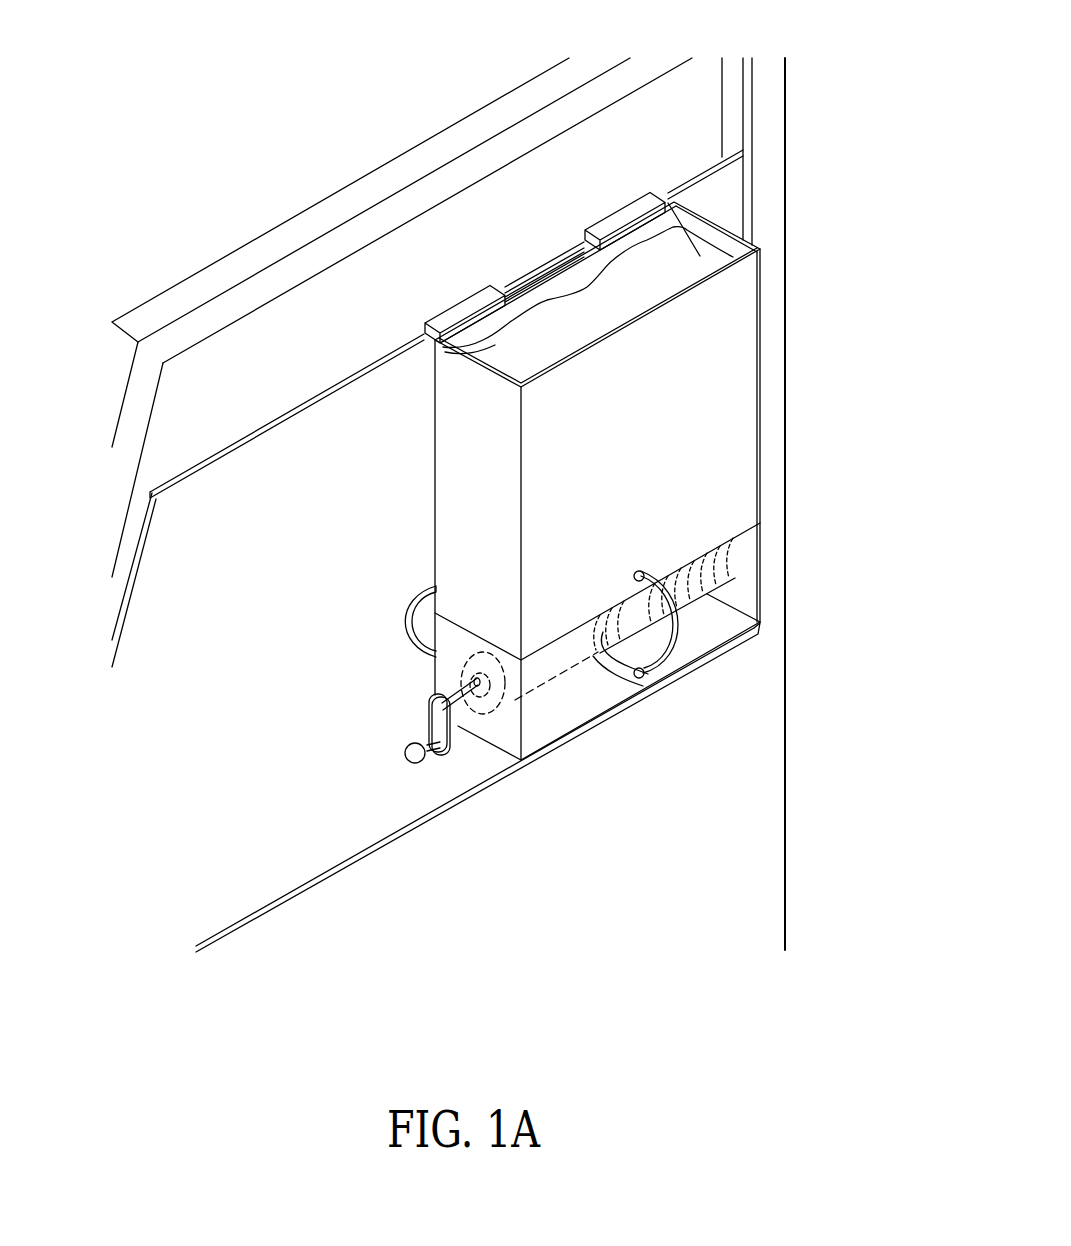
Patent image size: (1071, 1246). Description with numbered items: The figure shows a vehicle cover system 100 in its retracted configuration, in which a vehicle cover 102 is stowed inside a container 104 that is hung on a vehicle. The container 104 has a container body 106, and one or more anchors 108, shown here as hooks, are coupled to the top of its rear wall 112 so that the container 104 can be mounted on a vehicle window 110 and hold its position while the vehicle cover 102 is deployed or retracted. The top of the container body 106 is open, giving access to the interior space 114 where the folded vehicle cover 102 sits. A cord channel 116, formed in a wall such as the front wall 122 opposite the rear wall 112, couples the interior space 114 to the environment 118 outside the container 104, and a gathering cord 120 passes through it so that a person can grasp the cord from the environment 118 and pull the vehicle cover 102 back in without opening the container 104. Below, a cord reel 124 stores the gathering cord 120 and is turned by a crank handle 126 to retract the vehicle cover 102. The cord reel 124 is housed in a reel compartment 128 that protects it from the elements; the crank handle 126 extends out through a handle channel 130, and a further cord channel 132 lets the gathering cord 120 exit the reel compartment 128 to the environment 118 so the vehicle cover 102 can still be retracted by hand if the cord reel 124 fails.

The vehicle cover system 100 is at (170, 59).
The vehicle cover 102 is at (688, 256).
The container 104 is at (812, 276).
The container body 106 is at (410, 520).
The anchors 108 is at (580, 228).
The vehicle window 110 is at (340, 413).
The rear wall 112 is at (664, 218).
The interior space 114 is at (478, 336).
The cord channel 116 is at (670, 558).
The environment 118 is at (934, 419).
The gathering cord 120 is at (677, 652).
The front wall 122 is at (740, 407).
The cord reel 124 is at (447, 681).
The crank handle 126 is at (428, 737).
The reel compartment 128 is at (765, 597).
The handle channel 130 is at (480, 718).
The cord channel 132 is at (640, 682).